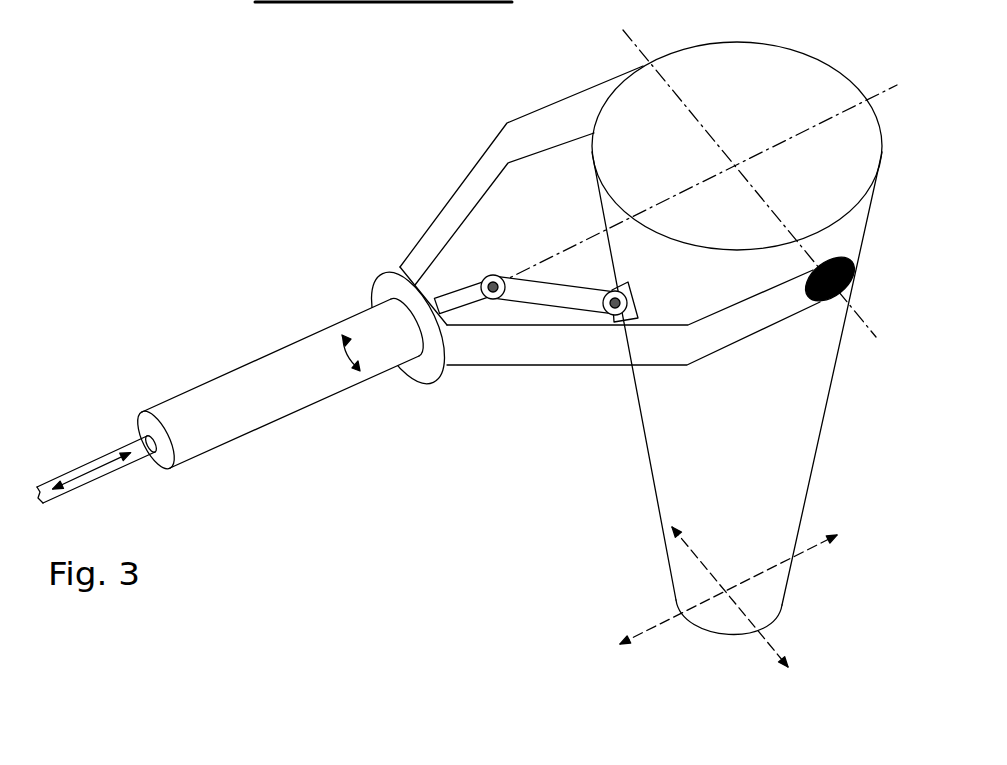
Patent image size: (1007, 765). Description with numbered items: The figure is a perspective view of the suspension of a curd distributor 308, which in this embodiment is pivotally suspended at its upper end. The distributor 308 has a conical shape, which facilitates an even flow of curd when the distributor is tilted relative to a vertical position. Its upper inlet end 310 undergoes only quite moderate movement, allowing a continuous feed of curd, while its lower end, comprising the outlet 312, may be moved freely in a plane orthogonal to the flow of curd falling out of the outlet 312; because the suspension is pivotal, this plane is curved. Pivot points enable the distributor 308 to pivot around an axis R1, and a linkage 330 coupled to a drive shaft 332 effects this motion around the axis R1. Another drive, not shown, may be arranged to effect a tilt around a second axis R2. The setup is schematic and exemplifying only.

The distributor 308 is at (756, 344).
The inlet end 310 is at (778, 72).
The outlet 312 is at (764, 629).
The linkage 330 is at (337, 340).
The drive shaft 332 is at (446, 295).
The axis R1 is at (749, 186).
The axis R2 is at (693, 182).